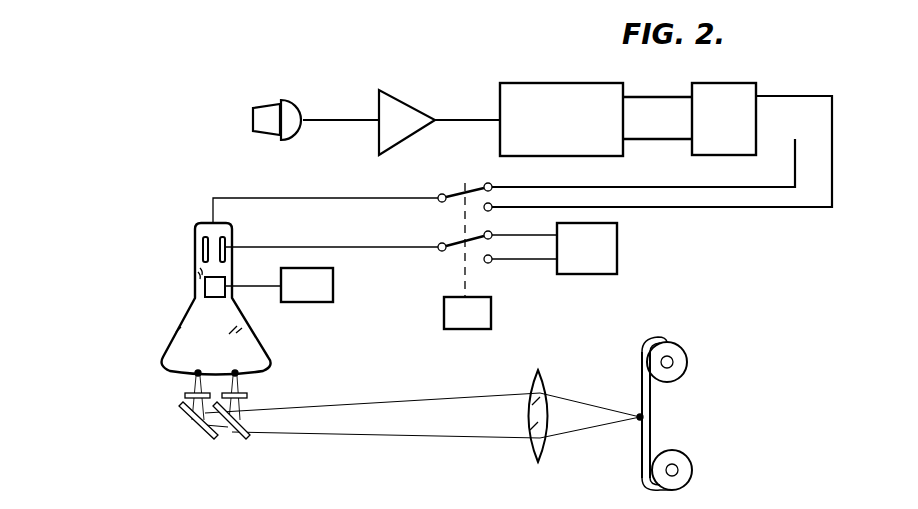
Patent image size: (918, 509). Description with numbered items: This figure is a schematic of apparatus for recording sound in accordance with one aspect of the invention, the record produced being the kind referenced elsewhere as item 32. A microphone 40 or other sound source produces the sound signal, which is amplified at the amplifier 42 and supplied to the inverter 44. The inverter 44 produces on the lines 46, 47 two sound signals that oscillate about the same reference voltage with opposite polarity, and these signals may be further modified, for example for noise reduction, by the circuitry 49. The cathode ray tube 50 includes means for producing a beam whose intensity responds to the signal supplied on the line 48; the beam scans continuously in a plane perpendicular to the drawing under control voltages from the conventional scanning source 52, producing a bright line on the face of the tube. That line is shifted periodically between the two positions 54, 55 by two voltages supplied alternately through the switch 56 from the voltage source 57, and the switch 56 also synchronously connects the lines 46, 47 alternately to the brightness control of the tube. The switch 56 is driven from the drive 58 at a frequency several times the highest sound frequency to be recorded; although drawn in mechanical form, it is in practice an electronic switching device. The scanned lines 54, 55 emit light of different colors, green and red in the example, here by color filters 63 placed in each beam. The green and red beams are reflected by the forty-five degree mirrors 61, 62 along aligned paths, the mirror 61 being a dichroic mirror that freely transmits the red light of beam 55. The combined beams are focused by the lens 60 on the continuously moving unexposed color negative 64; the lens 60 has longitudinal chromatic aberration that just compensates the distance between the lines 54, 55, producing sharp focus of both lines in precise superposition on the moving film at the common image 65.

The recording apparatus 32 is at (246, 14).
The microphone 40 is at (267, 106).
The amplifier 42 is at (400, 100).
The inverter 44 is at (579, 88).
The line 46 is at (663, 88).
The line 47 is at (654, 140).
The line 48 is at (357, 198).
The circuitry 49 is at (751, 84).
The cathode ray tube 50 is at (178, 298).
The scanning source 52 is at (333, 286).
The scanned line position 54 is at (237, 375).
The scanned line position 55 is at (196, 375).
The switch 56 is at (473, 178).
The voltage source 57 is at (612, 248).
The switch drive 58 is at (485, 316).
The lens 60 is at (527, 419).
The mirror 61 is at (236, 439).
The mirror 62 is at (208, 438).
The color filters 63 is at (185, 396).
The color negative 64 is at (652, 400).
The common image 65 is at (640, 420).